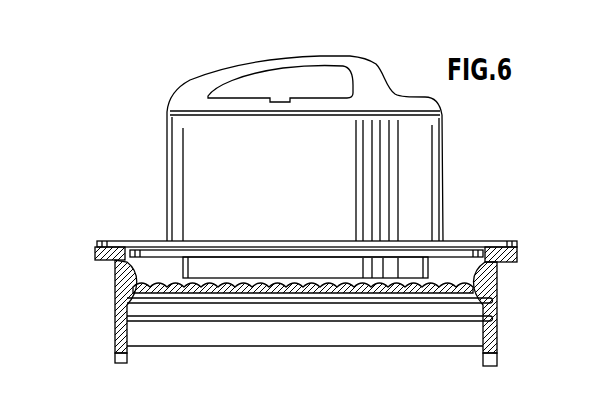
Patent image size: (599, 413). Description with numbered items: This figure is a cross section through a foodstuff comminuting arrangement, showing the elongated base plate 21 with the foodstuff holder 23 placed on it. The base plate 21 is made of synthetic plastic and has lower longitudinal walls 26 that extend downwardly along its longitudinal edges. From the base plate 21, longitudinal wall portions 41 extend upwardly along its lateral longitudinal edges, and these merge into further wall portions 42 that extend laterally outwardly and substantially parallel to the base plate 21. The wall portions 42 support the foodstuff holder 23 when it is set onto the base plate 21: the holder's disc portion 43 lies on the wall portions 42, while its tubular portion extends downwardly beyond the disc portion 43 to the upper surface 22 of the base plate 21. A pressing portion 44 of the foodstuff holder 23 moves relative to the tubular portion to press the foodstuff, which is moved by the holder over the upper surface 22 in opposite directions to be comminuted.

The base plate 21 is at (308, 285).
The upper surface 22 is at (180, 284).
The foodstuff holder 23 is at (450, 147).
The lower longitudinal walls 26 is at (115, 342).
The longitudinal wall portions 41 is at (115, 282).
The further wall portions 42 is at (93, 259).
The disc portion 43 is at (122, 243).
The pressing portion 44 is at (353, 142).